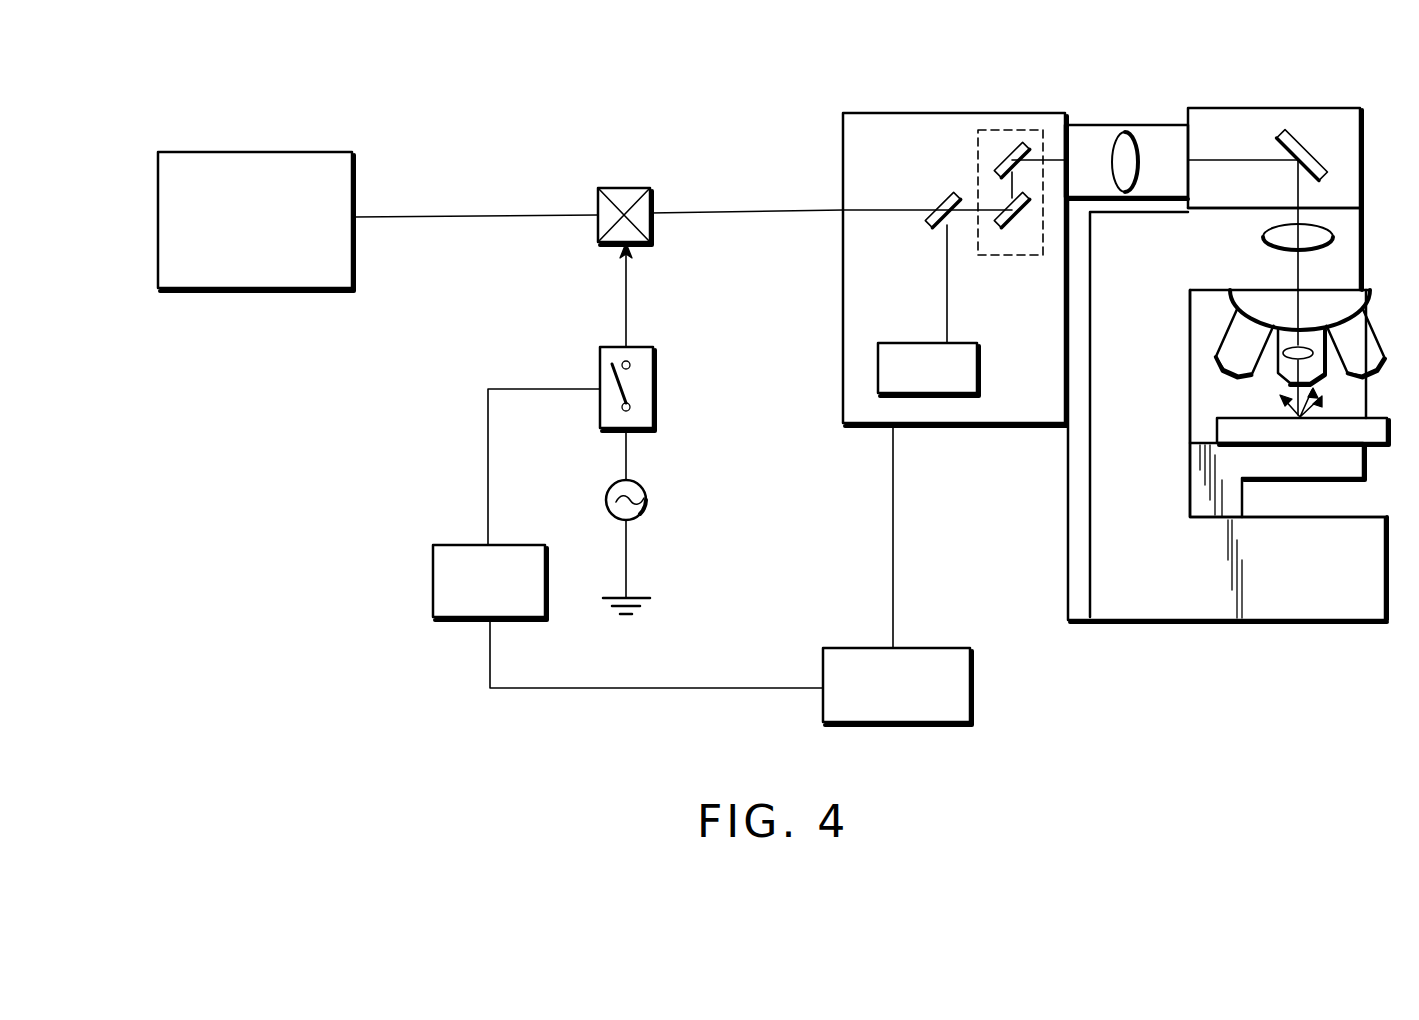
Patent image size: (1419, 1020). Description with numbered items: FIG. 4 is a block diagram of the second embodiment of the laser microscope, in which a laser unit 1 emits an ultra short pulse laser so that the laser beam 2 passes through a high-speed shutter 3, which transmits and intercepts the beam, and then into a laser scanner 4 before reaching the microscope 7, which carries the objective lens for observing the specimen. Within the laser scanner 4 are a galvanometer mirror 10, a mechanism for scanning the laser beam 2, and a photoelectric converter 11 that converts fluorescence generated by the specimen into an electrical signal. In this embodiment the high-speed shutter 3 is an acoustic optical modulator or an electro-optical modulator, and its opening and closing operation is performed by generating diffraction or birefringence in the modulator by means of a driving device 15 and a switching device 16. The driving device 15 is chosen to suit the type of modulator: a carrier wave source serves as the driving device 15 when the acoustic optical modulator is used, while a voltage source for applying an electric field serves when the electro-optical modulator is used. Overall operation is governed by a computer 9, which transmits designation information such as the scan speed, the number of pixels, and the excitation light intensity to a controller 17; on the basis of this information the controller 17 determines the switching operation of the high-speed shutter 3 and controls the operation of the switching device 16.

The laser unit 1 is at (256, 152).
The laser beam 2 is at (493, 218).
The high-speed shutter 3 is at (652, 228).
The laser scanner 4 is at (955, 243).
The microscope 7 is at (1365, 243).
The computer 9 is at (972, 684).
The galvanometer mirror 10 is at (1013, 130).
The photoelectric converter 11 is at (980, 365).
The driving device 15 is at (647, 498).
The switching device 16 is at (655, 385).
The controller 17 is at (433, 583).